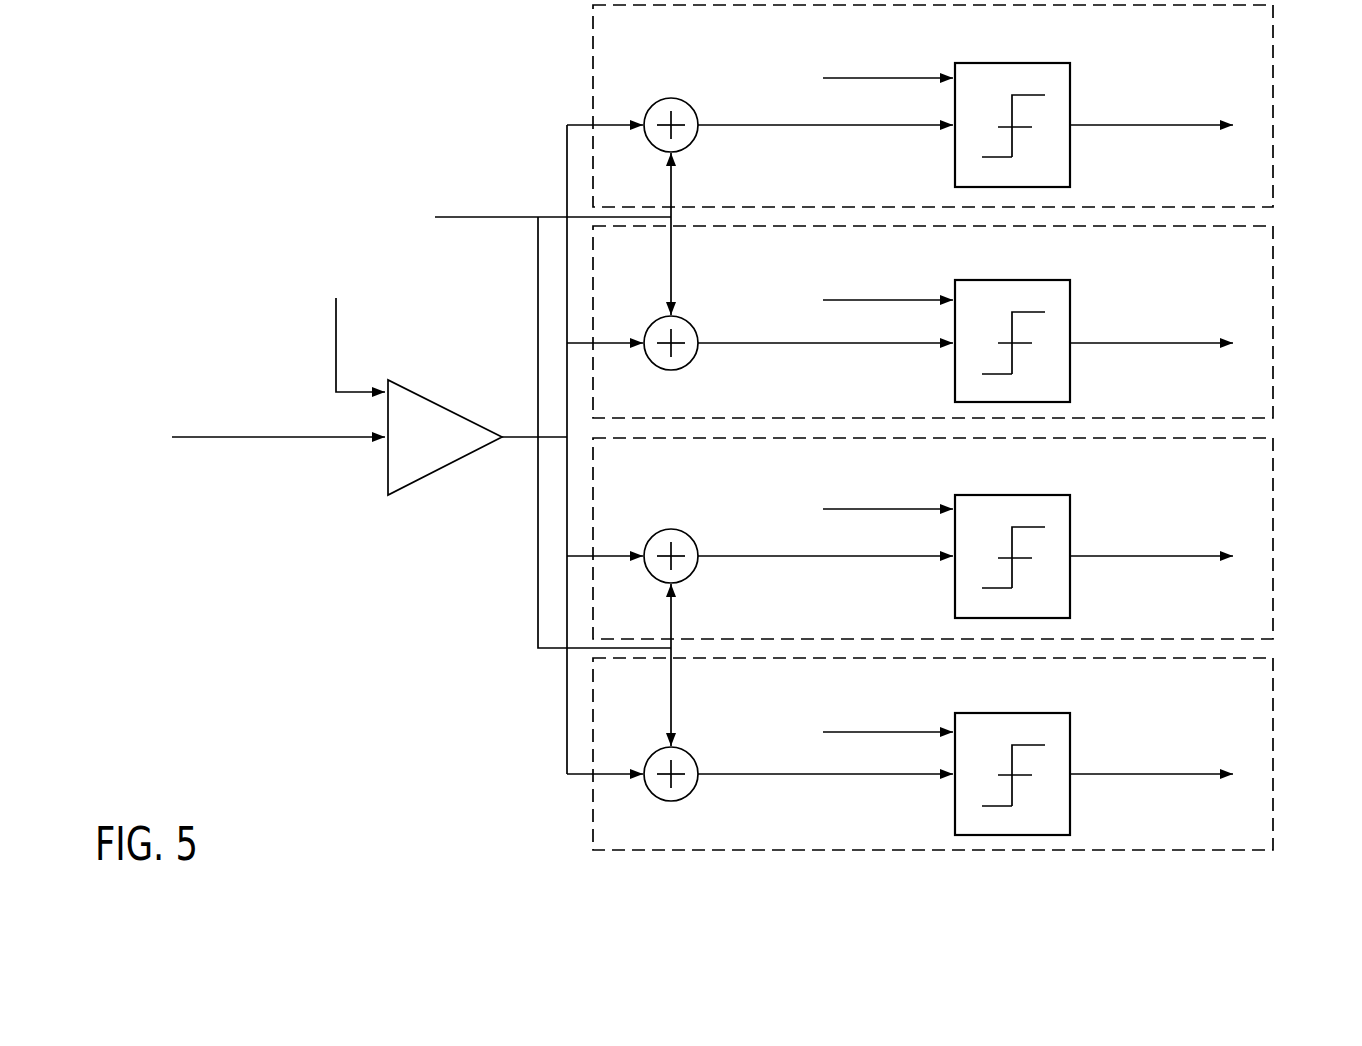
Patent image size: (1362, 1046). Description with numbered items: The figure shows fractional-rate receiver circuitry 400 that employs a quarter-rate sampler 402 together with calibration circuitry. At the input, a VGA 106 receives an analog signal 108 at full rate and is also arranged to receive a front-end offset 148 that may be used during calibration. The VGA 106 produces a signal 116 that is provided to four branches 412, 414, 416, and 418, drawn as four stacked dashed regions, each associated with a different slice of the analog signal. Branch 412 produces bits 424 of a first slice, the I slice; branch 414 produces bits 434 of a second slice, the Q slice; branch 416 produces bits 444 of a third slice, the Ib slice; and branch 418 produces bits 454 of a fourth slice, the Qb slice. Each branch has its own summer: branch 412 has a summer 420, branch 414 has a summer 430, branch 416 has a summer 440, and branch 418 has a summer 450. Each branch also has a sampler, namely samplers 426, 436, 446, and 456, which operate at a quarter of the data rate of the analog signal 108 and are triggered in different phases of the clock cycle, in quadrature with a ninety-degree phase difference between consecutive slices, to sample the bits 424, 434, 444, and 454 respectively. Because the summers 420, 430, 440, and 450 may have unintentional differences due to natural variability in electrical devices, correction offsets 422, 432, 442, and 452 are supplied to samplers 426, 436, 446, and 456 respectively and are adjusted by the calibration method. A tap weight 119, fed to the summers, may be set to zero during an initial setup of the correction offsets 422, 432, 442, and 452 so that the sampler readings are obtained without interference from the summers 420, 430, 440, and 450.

The fractional-rate receiver circuitry 400 is at (262, 110).
The quarter-rate sampler 402 is at (1273, 866).
The VGA 106 is at (447, 407).
The analog signal 108 is at (273, 440).
The signal 116 is at (522, 440).
The tap weight 119 is at (487, 218).
The front-end offset 148 is at (337, 347).
The branch 412 is at (1275, 108).
The branch 414 is at (1275, 323).
The branch 416 is at (1275, 540).
The branch 418 is at (1275, 755).
The summer 420 is at (690, 144).
The correction offset 422 is at (883, 79).
The bits 424 is at (1145, 126).
The sampler 426 is at (1013, 63).
The summer 430 is at (652, 323).
The correction offset 432 is at (883, 301).
The bits 434 is at (1145, 344).
The sampler 436 is at (1013, 280).
The summer 440 is at (690, 575).
The correction offset 442 is at (883, 510).
The bits 444 is at (1145, 557).
The sampler 446 is at (1013, 495).
The summer 450 is at (652, 754).
The correction offset 452 is at (883, 733).
The bits 454 is at (1145, 775).
The sampler 456 is at (1013, 713).